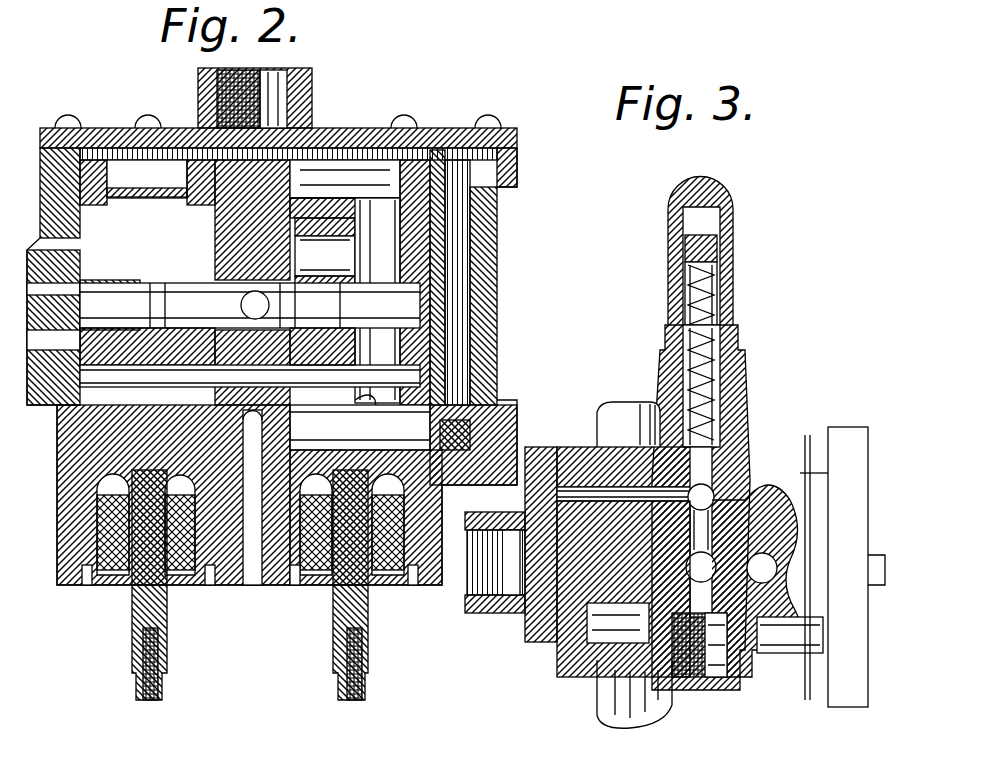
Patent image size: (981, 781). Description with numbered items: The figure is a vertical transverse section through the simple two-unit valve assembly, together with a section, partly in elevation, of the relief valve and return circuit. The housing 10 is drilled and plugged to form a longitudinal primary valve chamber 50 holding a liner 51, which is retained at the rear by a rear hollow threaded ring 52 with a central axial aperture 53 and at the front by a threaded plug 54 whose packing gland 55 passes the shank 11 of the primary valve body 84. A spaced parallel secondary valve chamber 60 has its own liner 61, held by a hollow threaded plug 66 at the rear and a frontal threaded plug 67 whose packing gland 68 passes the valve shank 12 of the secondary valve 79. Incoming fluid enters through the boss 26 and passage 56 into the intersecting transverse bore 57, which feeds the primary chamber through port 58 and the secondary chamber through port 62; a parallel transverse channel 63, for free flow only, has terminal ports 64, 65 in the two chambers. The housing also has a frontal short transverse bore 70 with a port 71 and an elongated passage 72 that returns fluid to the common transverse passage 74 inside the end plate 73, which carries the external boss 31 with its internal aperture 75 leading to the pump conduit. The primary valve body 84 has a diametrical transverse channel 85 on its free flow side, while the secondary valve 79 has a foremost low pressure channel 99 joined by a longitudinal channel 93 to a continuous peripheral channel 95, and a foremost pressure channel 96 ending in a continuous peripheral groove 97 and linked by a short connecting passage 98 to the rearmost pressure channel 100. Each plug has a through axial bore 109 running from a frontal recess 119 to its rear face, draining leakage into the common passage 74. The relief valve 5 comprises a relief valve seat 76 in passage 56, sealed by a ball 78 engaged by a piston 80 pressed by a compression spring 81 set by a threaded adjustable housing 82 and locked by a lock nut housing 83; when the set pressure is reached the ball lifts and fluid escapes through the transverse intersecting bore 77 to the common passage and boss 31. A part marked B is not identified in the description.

In FIG. 3, the relief valve 5 is at (742, 360).
In FIG. 2, the housing 10 is at (57, 465).
In FIG. 3, the housing 10 is at (808, 465).
In FIG. 2, the shank 11 is at (142, 618).
In FIG. 2, the valve shank 12 is at (343, 620).
In FIG. 3, the boss 26 is at (740, 680).
In FIG. 2, the external boss 31 is at (310, 90).
In FIG. 3, the external boss 31 is at (492, 600).
In FIG. 2, the primary valve chamber 50 is at (228, 216).
In FIG. 2, the liner 51 is at (183, 180).
In FIG. 2, the rear hollow threaded ring 52 is at (100, 195).
In FIG. 2, the central axial aperture 53 is at (288, 176).
In FIG. 2, the threaded plug 54 is at (195, 587).
In FIG. 2, the packing gland 55 is at (112, 587).
In FIG. 2, the passage 56 is at (250, 305).
In FIG. 3, the passage 56 is at (712, 600).
In FIG. 2, the transverse bore 57 is at (252, 254).
In FIG. 3, the transverse bore 57 is at (701, 567).
In FIG. 2, the port 58 is at (195, 305).
In FIG. 2, the secondary valve chamber 60 is at (455, 205).
In FIG. 2, the liner 61 is at (455, 230).
In FIG. 2, the port 62 is at (420, 300).
In FIG. 2, the transverse channel 63 is at (295, 360).
In FIG. 2, the terminal port 64 is at (250, 360).
In FIG. 2, the terminal port 65 is at (332, 377).
In FIG. 2, the hollow threaded plug 66 is at (385, 168).
In FIG. 2, the frontal threaded plug 67 is at (378, 587).
In FIG. 2, the packing gland 68 is at (318, 587).
In FIG. 2, the frontal short transverse bore 70 is at (480, 430).
In FIG. 2, the port 71 is at (455, 430).
In FIG. 2, the elongated passage 72 is at (460, 258).
In FIG. 2, the end plate 73 is at (452, 130).
In FIG. 2, the common transverse passage 74 is at (348, 155).
In FIG. 3, the common transverse passage 74 is at (540, 650).
In FIG. 2, the internal aperture 75 is at (262, 140).
In FIG. 3, the internal aperture 75 is at (520, 580).
In FIG. 3, the relief valve seat 76 is at (745, 470).
In FIG. 3, the transverse intersecting bore 77 is at (595, 495).
In FIG. 3, the ball 78 is at (735, 478).
In FIG. 2, the secondary valve 79 is at (500, 178).
In FIG. 3, the piston 80 is at (710, 490).
In FIG. 3, the compression spring 81 is at (722, 300).
In FIG. 3, the threaded adjustable housing 82 is at (720, 262).
In FIG. 3, the lock nut housing 83 is at (725, 222).
In FIG. 2, the primary valve body 84 is at (105, 425).
In FIG. 2, the transverse channel 85 is at (120, 365).
In FIG. 2, the longitudinal channel 93 is at (369, 417).
In FIG. 2, the continuous peripheral channel 95 is at (410, 360).
In FIG. 2, the foremost pressure channel 96 is at (370, 300).
In FIG. 2, the continuous peripheral groove 97 is at (400, 333).
In FIG. 2, the connecting passage 98 is at (392, 282).
In FIG. 2, the foremost low pressure channel 99 is at (360, 432).
In FIG. 2, the rearmost pressure channel 100 is at (325, 253).
In FIG. 2, the through axial bore 109 is at (70, 587).
In FIG. 2, the frontal recess 119 is at (252, 587).
In FIG. 3, the nozzle B is at (708, 682).